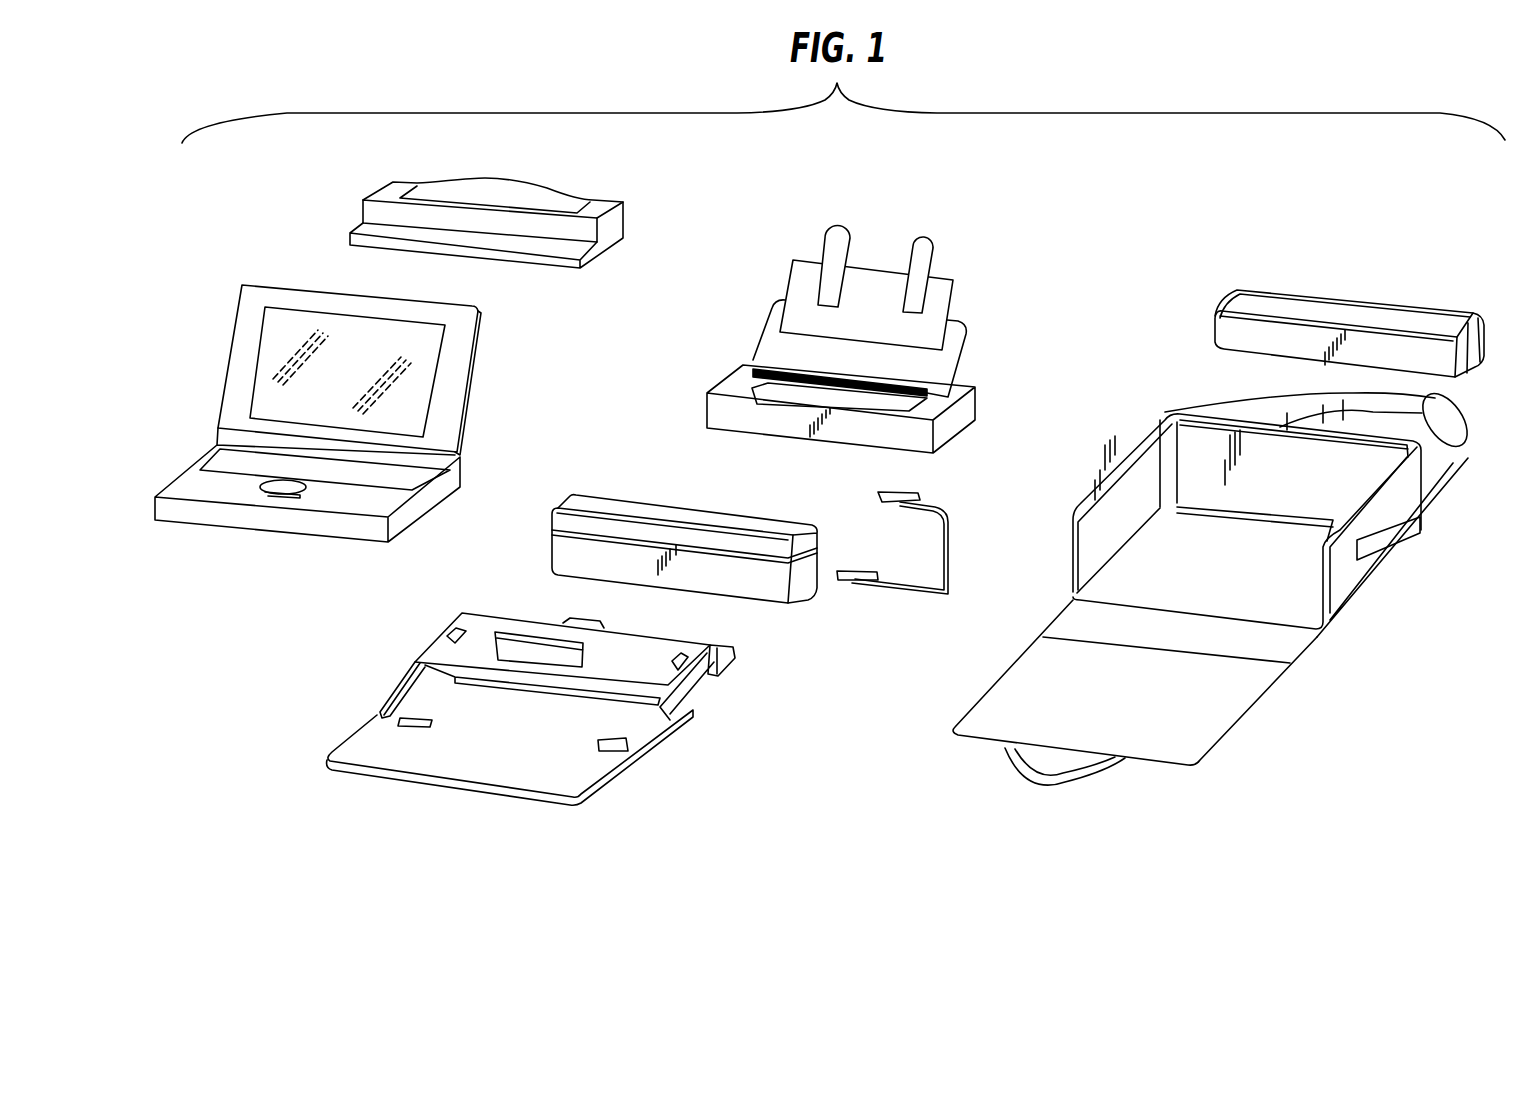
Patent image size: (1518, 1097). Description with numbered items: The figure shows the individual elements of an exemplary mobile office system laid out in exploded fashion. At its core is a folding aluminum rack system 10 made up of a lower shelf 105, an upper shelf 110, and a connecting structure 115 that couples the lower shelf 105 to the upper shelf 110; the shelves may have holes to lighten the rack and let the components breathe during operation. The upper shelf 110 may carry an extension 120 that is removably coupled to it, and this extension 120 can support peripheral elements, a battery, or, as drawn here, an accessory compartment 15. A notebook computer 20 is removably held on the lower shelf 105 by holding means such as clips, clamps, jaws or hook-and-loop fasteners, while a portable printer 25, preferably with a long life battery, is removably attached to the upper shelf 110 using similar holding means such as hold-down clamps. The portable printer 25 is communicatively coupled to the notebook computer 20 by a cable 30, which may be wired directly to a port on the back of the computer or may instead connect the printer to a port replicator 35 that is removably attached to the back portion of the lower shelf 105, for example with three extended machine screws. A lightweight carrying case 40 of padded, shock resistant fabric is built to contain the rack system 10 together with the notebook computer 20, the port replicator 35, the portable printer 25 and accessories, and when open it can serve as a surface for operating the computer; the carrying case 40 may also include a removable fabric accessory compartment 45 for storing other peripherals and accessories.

The folding aluminum rack system 10 is at (553, 712).
The accessory compartment 15 is at (768, 575).
The notebook computer 20 is at (260, 527).
The portable printer 25 is at (857, 262).
The cable 30 is at (950, 537).
The port replicator 35 is at (597, 198).
The carrying case 40 is at (955, 720).
The removable accessory compartment 45 is at (1343, 300).
The lower shelf 105 is at (592, 780).
The upper shelf 110 is at (477, 630).
The connecting structure 115 is at (410, 680).
The extension 120 is at (722, 675).